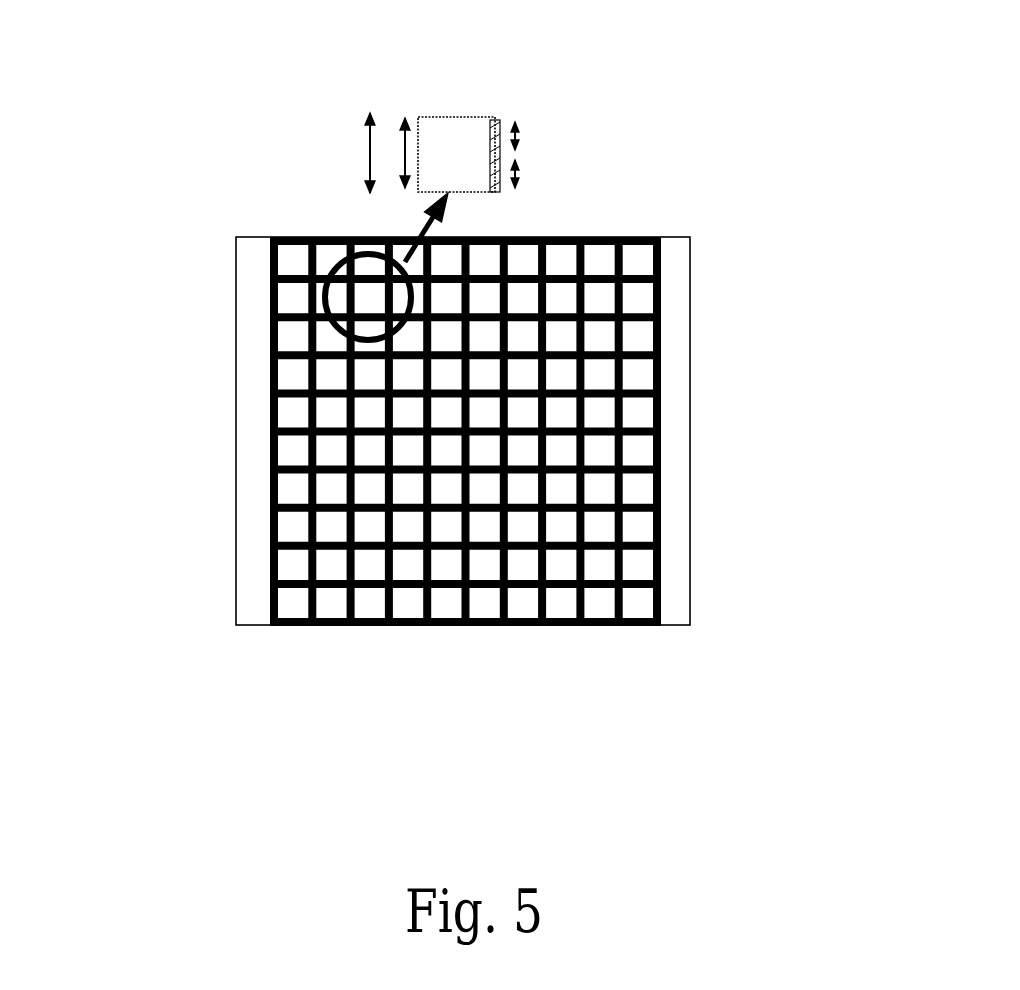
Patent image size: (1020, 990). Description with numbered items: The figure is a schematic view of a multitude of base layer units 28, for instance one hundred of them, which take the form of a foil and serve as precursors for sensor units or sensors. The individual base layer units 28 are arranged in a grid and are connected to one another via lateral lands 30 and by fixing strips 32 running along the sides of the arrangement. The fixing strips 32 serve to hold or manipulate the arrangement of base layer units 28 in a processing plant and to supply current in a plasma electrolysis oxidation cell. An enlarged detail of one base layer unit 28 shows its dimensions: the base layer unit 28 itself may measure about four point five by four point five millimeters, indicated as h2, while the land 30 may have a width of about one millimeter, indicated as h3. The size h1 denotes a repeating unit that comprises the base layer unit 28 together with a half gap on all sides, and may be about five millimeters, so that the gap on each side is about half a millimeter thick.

The base layer unit 28 is at (455, 148).
The lateral land 30 is at (497, 150).
The fixing strip 32 is at (261, 418).
The repeating unit h1 is at (363, 153).
The base layer unit dimension h2 is at (405, 149).
The land width h3 is at (522, 152).